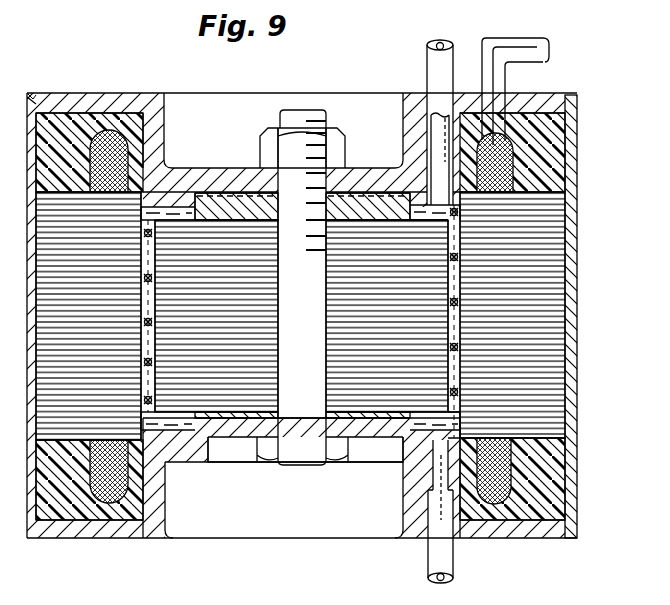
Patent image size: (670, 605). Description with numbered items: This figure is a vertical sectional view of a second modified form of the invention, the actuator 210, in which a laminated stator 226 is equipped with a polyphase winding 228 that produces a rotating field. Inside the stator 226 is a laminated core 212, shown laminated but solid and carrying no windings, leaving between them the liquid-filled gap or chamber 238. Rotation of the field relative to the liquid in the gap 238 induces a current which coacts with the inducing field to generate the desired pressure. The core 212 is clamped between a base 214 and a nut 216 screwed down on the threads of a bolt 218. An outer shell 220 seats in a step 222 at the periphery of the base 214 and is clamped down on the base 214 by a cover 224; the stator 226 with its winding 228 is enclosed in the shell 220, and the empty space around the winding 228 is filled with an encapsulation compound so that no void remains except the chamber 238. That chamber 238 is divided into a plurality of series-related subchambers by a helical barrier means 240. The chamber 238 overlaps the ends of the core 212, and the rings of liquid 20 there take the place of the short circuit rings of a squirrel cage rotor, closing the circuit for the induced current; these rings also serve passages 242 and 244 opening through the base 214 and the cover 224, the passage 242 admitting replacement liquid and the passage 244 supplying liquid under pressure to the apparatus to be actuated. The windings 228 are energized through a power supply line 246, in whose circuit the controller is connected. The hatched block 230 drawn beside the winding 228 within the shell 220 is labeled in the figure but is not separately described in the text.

The rings of liquid 20 is at (178, 212).
The actuator 210 is at (584, 102).
The laminated core 212 is at (250, 437).
The base 214 is at (168, 516).
The nut 216 is at (361, 204).
The bolt 218 is at (328, 117).
The outer shell 220 is at (577, 163).
The step 222 is at (567, 525).
The cover 224 is at (542, 93).
The laminated stator 226 is at (547, 237).
The polyphase winding 228 is at (513, 177).
The pole piece 230 is at (547, 145).
The gap 238 is at (462, 418).
The helical barrier means 240 is at (465, 302).
The passage 242 is at (428, 487).
The passage 244 is at (437, 185).
The power supply line 246 is at (553, 46).